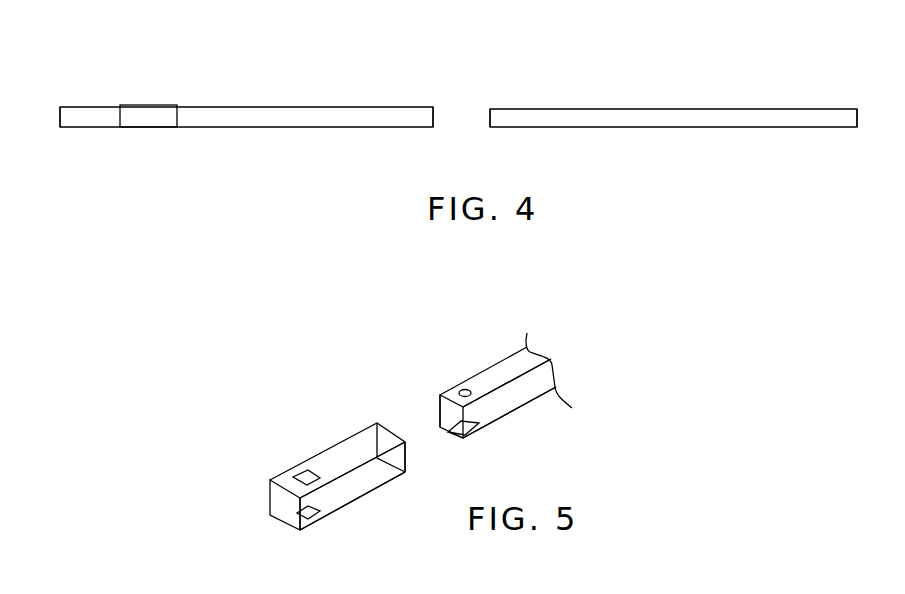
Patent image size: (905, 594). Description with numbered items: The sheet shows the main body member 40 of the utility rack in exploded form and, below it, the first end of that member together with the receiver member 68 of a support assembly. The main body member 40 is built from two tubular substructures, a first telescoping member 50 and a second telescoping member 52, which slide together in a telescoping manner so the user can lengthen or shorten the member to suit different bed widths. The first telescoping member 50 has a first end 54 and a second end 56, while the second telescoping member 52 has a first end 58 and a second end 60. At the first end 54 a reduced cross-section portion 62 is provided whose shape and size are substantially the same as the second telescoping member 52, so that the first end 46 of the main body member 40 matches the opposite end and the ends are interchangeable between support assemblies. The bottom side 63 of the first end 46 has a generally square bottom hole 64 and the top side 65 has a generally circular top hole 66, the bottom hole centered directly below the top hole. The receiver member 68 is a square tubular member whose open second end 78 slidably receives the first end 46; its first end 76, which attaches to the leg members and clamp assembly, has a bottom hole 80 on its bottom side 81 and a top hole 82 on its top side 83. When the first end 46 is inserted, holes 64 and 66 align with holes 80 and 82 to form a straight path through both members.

In FIG. 4, the main body member 40 is at (458, 73).
In FIG. 5, the main body member 40 is at (528, 355).
In FIG. 4, the first telescoping member 50 is at (263, 117).
In FIG. 4, the second telescoping member 52 is at (700, 117).
In FIG. 4, the first end of first telescoping member 54 is at (60, 127).
In FIG. 4, the second end of first telescoping member 56 is at (433, 127).
In FIG. 4, the first end of second telescoping member 58 is at (490, 127).
In FIG. 4, the second end of second telescoping member 60 is at (857, 127).
In FIG. 4, the reduced cross-section portion 62 is at (98, 118).
In FIG. 5, the first end of main body member 46 is at (437, 388).
In FIG. 5, the bottom side 63 is at (489, 431).
In FIG. 5, the bottom hole 64 is at (453, 433).
In FIG. 5, the top side 65 is at (495, 373).
In FIG. 5, the top hole 66 is at (467, 389).
In FIG. 5, the receiver member 68 is at (367, 440).
In FIG. 5, the first end of receiver member 76 is at (303, 533).
In FIG. 5, the open second end of receiver member 78 is at (408, 476).
In FIG. 5, the bottom hole of receiver member 80 is at (293, 515).
In FIG. 5, the bottom side of receiver member 81 is at (361, 508).
In FIG. 5, the top hole of receiver member 82 is at (304, 476).
In FIG. 5, the top side of receiver member 83 is at (337, 460).